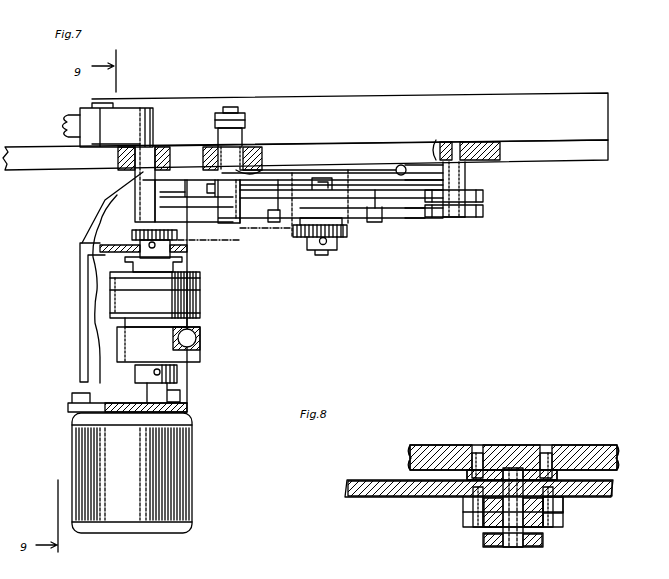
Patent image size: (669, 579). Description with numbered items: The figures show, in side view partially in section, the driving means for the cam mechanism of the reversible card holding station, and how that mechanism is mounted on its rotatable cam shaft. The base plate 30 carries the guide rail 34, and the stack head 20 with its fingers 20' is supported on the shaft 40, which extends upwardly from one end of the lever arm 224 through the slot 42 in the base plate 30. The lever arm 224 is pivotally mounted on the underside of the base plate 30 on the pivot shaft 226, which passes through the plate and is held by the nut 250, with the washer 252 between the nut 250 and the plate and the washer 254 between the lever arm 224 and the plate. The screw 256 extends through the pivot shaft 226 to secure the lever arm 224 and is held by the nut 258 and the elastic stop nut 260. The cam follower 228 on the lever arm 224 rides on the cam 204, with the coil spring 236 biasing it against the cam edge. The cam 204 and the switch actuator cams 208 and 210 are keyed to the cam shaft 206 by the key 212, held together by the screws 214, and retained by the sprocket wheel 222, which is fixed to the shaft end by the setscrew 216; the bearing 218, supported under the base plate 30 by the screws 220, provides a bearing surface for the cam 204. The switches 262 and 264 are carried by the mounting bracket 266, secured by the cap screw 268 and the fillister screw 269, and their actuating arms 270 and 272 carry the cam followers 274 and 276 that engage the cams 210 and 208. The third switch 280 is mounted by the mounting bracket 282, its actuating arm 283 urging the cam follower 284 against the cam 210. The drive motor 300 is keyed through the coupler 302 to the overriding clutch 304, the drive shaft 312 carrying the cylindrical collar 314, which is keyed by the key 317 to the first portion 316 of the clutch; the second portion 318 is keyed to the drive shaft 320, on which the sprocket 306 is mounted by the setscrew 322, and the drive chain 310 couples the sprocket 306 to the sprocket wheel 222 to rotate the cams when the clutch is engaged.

In FIG. 7, the stack head 20 is at (116, 113).
In FIG. 7, the fingers 20' is at (59, 126).
In FIG. 7, the base plate 30 is at (62, 162).
In FIG. 8, the base plate 30 is at (412, 460).
In FIG. 7, the guide rail 34 is at (499, 30).
In FIG. 7, the shaft 40 is at (118, 195).
In FIG. 7, the slot 42 is at (125, 160).
In FIG. 7, the cam 204 is at (399, 177).
In FIG. 8, the cam 204 is at (418, 489).
In FIG. 7, the cam shaft 206 is at (321, 254).
In FIG. 8, the cam shaft 206 is at (493, 538).
In FIG. 7, the switch actuator cam 208 is at (357, 217).
In FIG. 8, the switch actuator cam 208 is at (464, 522).
In FIG. 7, the switch actuator cam 210 is at (354, 196).
In FIG. 8, the switch actuator cam 210 is at (463, 503).
In FIG. 8, the key 212 is at (563, 506).
In FIG. 8, the screws 214 is at (477, 526).
In FIG. 7, the setscrew 216 is at (320, 241).
In FIG. 8, the setscrew 216 is at (517, 548).
In FIG. 8, the bearing 218 is at (560, 473).
In FIG. 8, the screws 220 is at (479, 448).
In FIG. 7, the sprocket wheel 222 is at (348, 232).
In FIG. 8, the sprocket wheel 222 is at (533, 537).
In FIG. 7, the lever arm 224 is at (180, 175).
In FIG. 7, the pivot shaft 226 is at (250, 145).
In FIG. 7, the cam follower 228 is at (328, 183).
In FIG. 7, the coil spring 236 is at (362, 181).
In FIG. 7, the nut 250 is at (249, 135).
In FIG. 7, the washer 252 is at (211, 147).
In FIG. 7, the washer 254 is at (258, 166).
In FIG. 7, the screw 256 is at (237, 226).
In FIG. 7, the nut 258 is at (250, 128).
In FIG. 7, the elastic stop nut 260 is at (240, 112).
In FIG. 7, the switch 262 is at (484, 197).
In FIG. 7, the switch 264 is at (484, 212).
In FIG. 7, the mounting bracket 266 is at (466, 181).
In FIG. 7, the cap screw 268 is at (462, 144).
In FIG. 7, the fillister screw 269 is at (456, 222).
In FIG. 7, the actuating arm 270 is at (404, 186).
In FIG. 7, the actuating arm 272 is at (416, 214).
In FIG. 7, the cam follower 274 is at (383, 201).
In FIG. 7, the cam follower 276 is at (377, 214).
In FIG. 7, the third switch 280 is at (205, 200).
In FIG. 7, the mounting bracket 282 is at (186, 192).
In FIG. 7, the actuating arm 283 is at (271, 200).
In FIG. 7, the cam follower 284 is at (278, 201).
In FIG. 7, the drive motor 300 is at (98, 438).
In FIG. 7, the coupler 302 is at (201, 339).
In FIG. 7, the overriding clutch 304 is at (186, 306).
In FIG. 7, the sprocket 306 is at (130, 235).
In FIG. 7, the drive chain 310 is at (254, 238).
In FIG. 7, the drive shaft 312 is at (147, 392).
In FIG. 7, the cylindrical collar 314 is at (201, 346).
In FIG. 7, the first portion 316 is at (162, 373).
In FIG. 7, the key 317 is at (196, 331).
In FIG. 7, the second portion 318 is at (112, 282).
In FIG. 7, the drive shaft 320 is at (172, 253).
In FIG. 7, the setscrew 322 is at (172, 246).